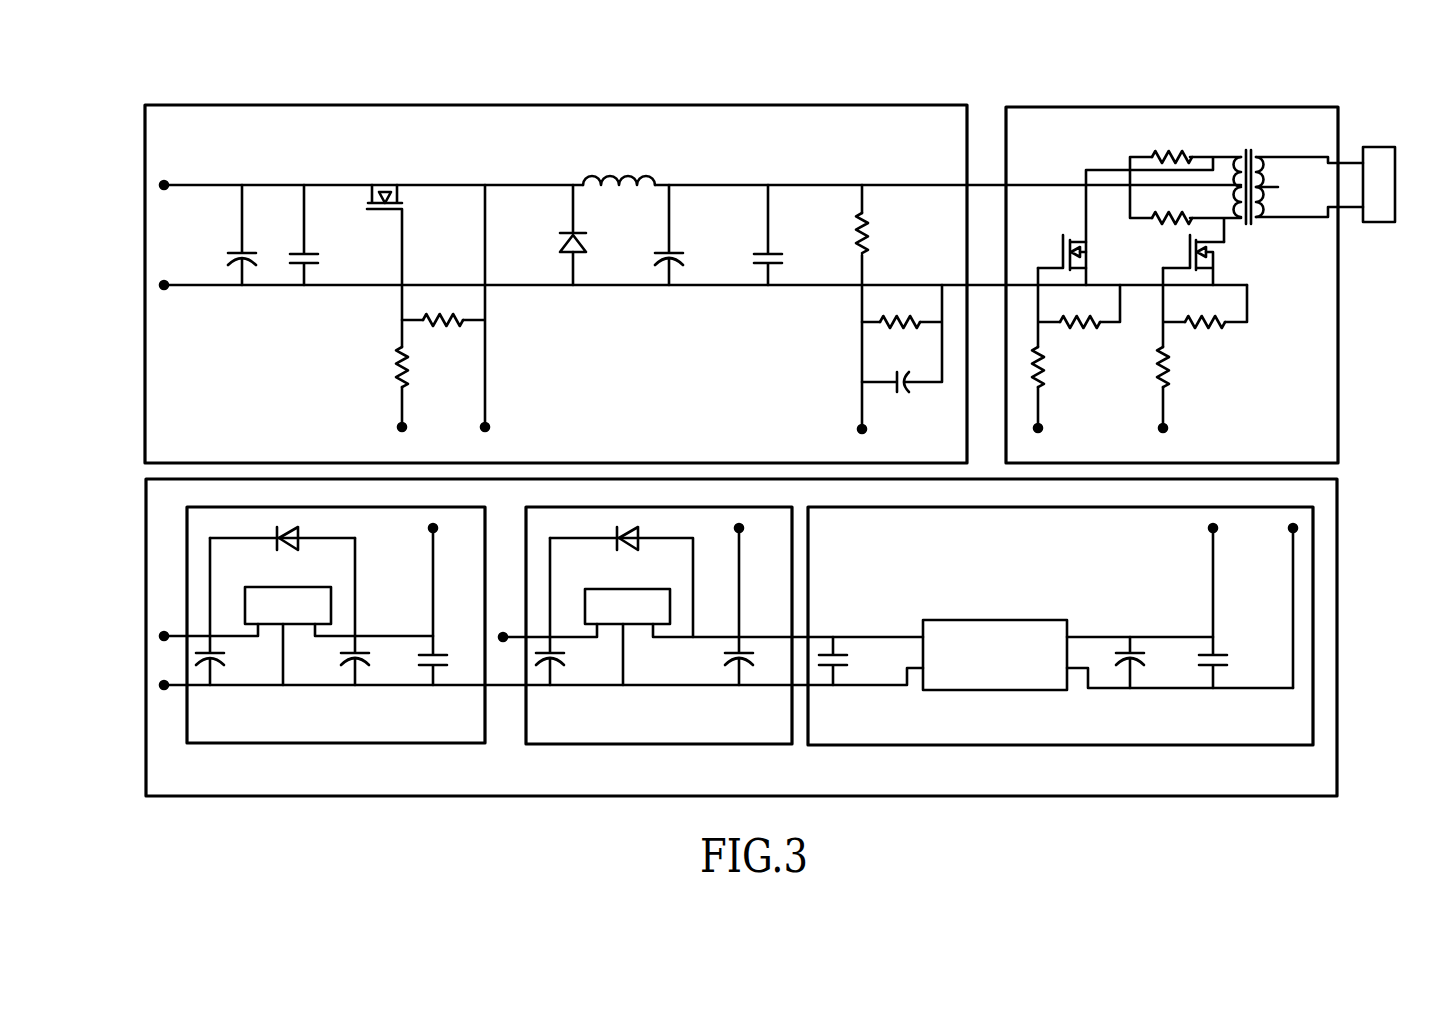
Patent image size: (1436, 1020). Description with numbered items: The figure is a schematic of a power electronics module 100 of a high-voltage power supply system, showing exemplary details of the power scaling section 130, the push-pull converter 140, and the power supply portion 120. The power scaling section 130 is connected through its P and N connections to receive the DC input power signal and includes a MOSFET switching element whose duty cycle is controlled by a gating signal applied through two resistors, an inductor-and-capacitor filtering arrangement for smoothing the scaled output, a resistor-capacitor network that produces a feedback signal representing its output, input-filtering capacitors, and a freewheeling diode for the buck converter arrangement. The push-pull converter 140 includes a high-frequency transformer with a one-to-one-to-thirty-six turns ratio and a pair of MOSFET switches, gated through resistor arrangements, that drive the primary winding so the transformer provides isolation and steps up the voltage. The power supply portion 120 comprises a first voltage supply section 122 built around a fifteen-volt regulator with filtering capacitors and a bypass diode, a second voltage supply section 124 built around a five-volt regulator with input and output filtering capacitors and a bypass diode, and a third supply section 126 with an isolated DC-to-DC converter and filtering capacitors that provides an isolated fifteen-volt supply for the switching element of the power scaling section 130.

The power electronics module 100 is at (1278, 78).
The power supply portion 120 is at (1195, 797).
The first voltage supply section 122 is at (268, 743).
The second voltage supply section 124 is at (667, 744).
The third supply section 126 is at (1050, 745).
The power scaling section 130 is at (282, 105).
The push-pull converter 140 is at (1339, 350).